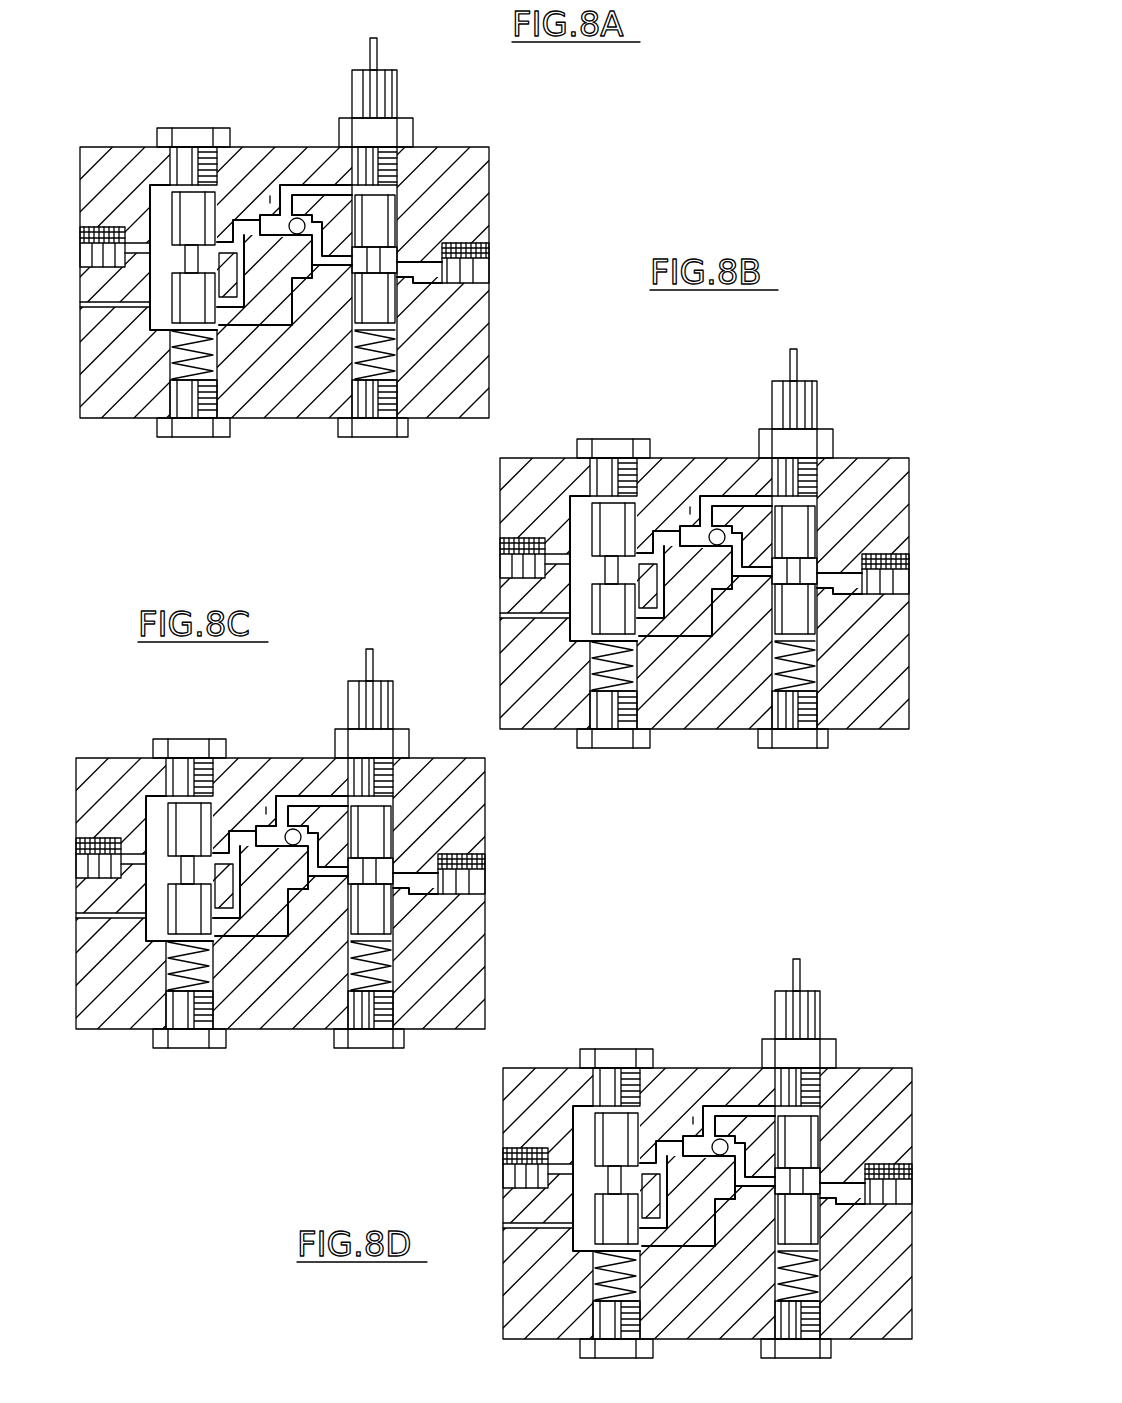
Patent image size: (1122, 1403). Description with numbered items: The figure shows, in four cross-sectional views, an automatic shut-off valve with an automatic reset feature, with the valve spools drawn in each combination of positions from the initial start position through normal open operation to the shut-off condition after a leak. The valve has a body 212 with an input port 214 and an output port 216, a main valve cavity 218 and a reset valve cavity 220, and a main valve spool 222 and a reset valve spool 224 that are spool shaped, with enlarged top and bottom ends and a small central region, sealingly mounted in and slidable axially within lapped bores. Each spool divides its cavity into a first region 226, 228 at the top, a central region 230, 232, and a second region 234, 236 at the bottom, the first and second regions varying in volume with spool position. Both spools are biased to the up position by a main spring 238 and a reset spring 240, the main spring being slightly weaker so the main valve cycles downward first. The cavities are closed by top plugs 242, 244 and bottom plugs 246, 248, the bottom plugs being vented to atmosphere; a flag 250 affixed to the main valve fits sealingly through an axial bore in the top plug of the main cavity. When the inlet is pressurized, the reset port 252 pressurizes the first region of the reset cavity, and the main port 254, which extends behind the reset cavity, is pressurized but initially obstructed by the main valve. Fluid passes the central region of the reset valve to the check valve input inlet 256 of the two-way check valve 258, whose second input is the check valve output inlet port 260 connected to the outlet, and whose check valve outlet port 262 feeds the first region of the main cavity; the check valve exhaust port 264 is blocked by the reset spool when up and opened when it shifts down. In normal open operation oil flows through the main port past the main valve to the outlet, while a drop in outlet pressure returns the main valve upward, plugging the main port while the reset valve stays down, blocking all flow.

In FIG. 8A, the body 212 is at (466, 165).
In FIG. 8B, the body 212 is at (675, 593).
In FIG. 8C, the body 212 is at (363, 893).
In FIG. 8D, the body 212 is at (677, 1175).
In FIG. 8A, the input port 214 is at (80, 243).
In FIG. 8B, the input port 214 is at (494, 558).
In FIG. 8C, the input port 214 is at (77, 838).
In FIG. 8D, the input port 214 is at (501, 1168).
In FIG. 8A, the output port 216 is at (490, 262).
In FIG. 8B, the output port 216 is at (906, 564).
In FIG. 8C, the output port 216 is at (487, 873).
In FIG. 8D, the output port 216 is at (908, 1176).
In FIG. 8A, the main valve cavity 218 is at (395, 365).
In FIG. 8B, the main valve cavity 218 is at (794, 612).
In FIG. 8C, the main valve cavity 218 is at (370, 912).
In FIG. 8D, the main valve cavity 218 is at (797, 1222).
In FIG. 8A, the reset valve cavity 220 is at (243, 283).
In FIG. 8B, the reset valve cavity 220 is at (648, 586).
In FIG. 8C, the reset valve cavity 220 is at (224, 886).
In FIG. 8D, the reset valve cavity 220 is at (651, 1196).
In FIG. 8A, the main valve spool 222 is at (392, 210).
In FIG. 8B, the main valve spool 222 is at (861, 549).
In FIG. 8C, the main valve spool 222 is at (442, 859).
In FIG. 8D, the main valve spool 222 is at (863, 1167).
In FIG. 8A, the reset valve spool 224 is at (222, 250).
In FIG. 8B, the reset valve spool 224 is at (544, 564).
In FIG. 8C, the reset valve spool 224 is at (122, 868).
In FIG. 8D, the reset valve spool 224 is at (546, 1178).
In FIG. 8A, the first region of the main valve cavity 226 is at (392, 187).
In FIG. 8B, the first region of the main valve cavity 226 is at (830, 454).
In FIG. 8C, the first region of the main valve cavity 226 is at (403, 757).
In FIG. 8D, the first region of the main valve cavity 226 is at (831, 1067).
In FIG. 8A, the first region of the reset valve cavity 228 is at (165, 185).
In FIG. 8B, the first region of the reset valve cavity 228 is at (613, 477).
In FIG. 8C, the first region of the reset valve cavity 228 is at (189, 777).
In FIG. 8D, the first region of the reset valve cavity 228 is at (645, 1073).
In FIG. 8A, the central region of the main valve 230 is at (392, 257).
In FIG. 8B, the central region of the main valve 230 is at (839, 583).
In FIG. 8C, the central region of the main valve 230 is at (415, 883).
In FIG. 8D, the central region of the main valve 230 is at (842, 1193).
In FIG. 8A, the central region of the reset valve 232 is at (177, 253).
In FIG. 8B, the central region of the reset valve 232 is at (557, 559).
In FIG. 8C, the central region of the reset valve 232 is at (133, 859).
In FIG. 8D, the central region of the reset valve 232 is at (560, 1169).
In FIG. 8A, the second region of the main valve cavity 234 is at (395, 345).
In FIG. 8B, the second region of the main valve cavity 234 is at (795, 665).
In FIG. 8C, the second region of the main valve cavity 234 is at (371, 965).
In FIG. 8D, the second region of the main valve cavity 234 is at (798, 1275).
In FIG. 8A, the second region of the reset valve cavity 236 is at (130, 387).
In FIG. 8B, the second region of the reset valve cavity 236 is at (613, 685).
In FIG. 8C, the second region of the reset valve cavity 236 is at (189, 985).
In FIG. 8D, the second region of the reset valve cavity 236 is at (616, 1295).
In FIG. 8A, the main spring 238 is at (397, 365).
In FIG. 8C, the main spring 238 is at (408, 1030).
In FIG. 8A, the reset spring 240 is at (160, 347).
In FIG. 8B, the reset spring 240 is at (613, 666).
In FIG. 8C, the reset spring 240 is at (150, 1010).
In FIG. 8D, the reset spring 240 is at (616, 1276).
In FIG. 8A, the top plug 242 is at (398, 80).
In FIG. 8B, the top plug 242 is at (829, 402).
In FIG. 8C, the top plug 242 is at (370, 705).
In FIG. 8D, the top plug 242 is at (825, 1003).
In FIG. 8A, the top plug 244 is at (197, 128).
In FIG. 8B, the top plug 244 is at (619, 430).
In FIG. 8C, the top plug 244 is at (197, 730).
In FIG. 8D, the top plug 244 is at (616, 1037).
In FIG. 8A, the bottom plug 246 is at (378, 437).
In FIG. 8B, the bottom plug 246 is at (793, 739).
In FIG. 8C, the bottom plug 246 is at (369, 1043).
In FIG. 8D, the bottom plug 246 is at (792, 1340).
In FIG. 8A, the bottom plug 248 is at (186, 437).
In FIG. 8B, the bottom plug 248 is at (613, 739).
In FIG. 8C, the bottom plug 248 is at (185, 1044).
In FIG. 8D, the bottom plug 248 is at (616, 1340).
In FIG. 8A, the flag 250 is at (376, 38).
In FIG. 8B, the flag 250 is at (818, 361).
In FIG. 8C, the flag 250 is at (382, 652).
In FIG. 8D, the flag 250 is at (819, 958).
In FIG. 8A, the reset port 252 is at (175, 188).
In FIG. 8B, the reset port 252 is at (580, 530).
In FIG. 8C, the reset port 252 is at (161, 830).
In FIG. 8D, the reset port 252 is at (606, 1178).
In FIG. 8A, the main port 254 is at (150, 277).
In FIG. 8B, the main port 254 is at (512, 631).
In FIG. 8C, the main port 254 is at (90, 928).
In FIG. 8D, the main port 254 is at (513, 1250).
In FIG. 8A, the check valve input inlet 256 is at (247, 235).
In FIG. 8B, the check valve input inlet 256 is at (666, 520).
In FIG. 8C, the check valve input inlet 256 is at (242, 823).
In FIG. 8D, the check valve input inlet 256 is at (661, 1184).
In FIG. 8A, the check valve 258 is at (272, 200).
In FIG. 8B, the check valve 258 is at (731, 462).
In FIG. 8C, the check valve 258 is at (307, 811).
In FIG. 8D, the check valve 258 is at (734, 1083).
In FIG. 8A, the check valve output inlet port 260 is at (307, 272).
In FIG. 8B, the check valve output inlet port 260 is at (745, 655).
In FIG. 8C, the check valve output inlet port 260 is at (318, 960).
In FIG. 8D, the check valve output inlet port 260 is at (755, 1164).
In FIG. 8A, the check valve outlet port 262 is at (297, 218).
In FIG. 8B, the check valve outlet port 262 is at (715, 508).
In FIG. 8C, the check valve outlet port 262 is at (292, 798).
In FIG. 8D, the check valve outlet port 262 is at (709, 1167).
In FIG. 8A, the check valve exhaust port 264 is at (260, 285).
In FIG. 8B, the check valve exhaust port 264 is at (685, 697).
In FIG. 8C, the check valve exhaust port 264 is at (261, 982).
In FIG. 8D, the check valve exhaust port 264 is at (688, 1222).